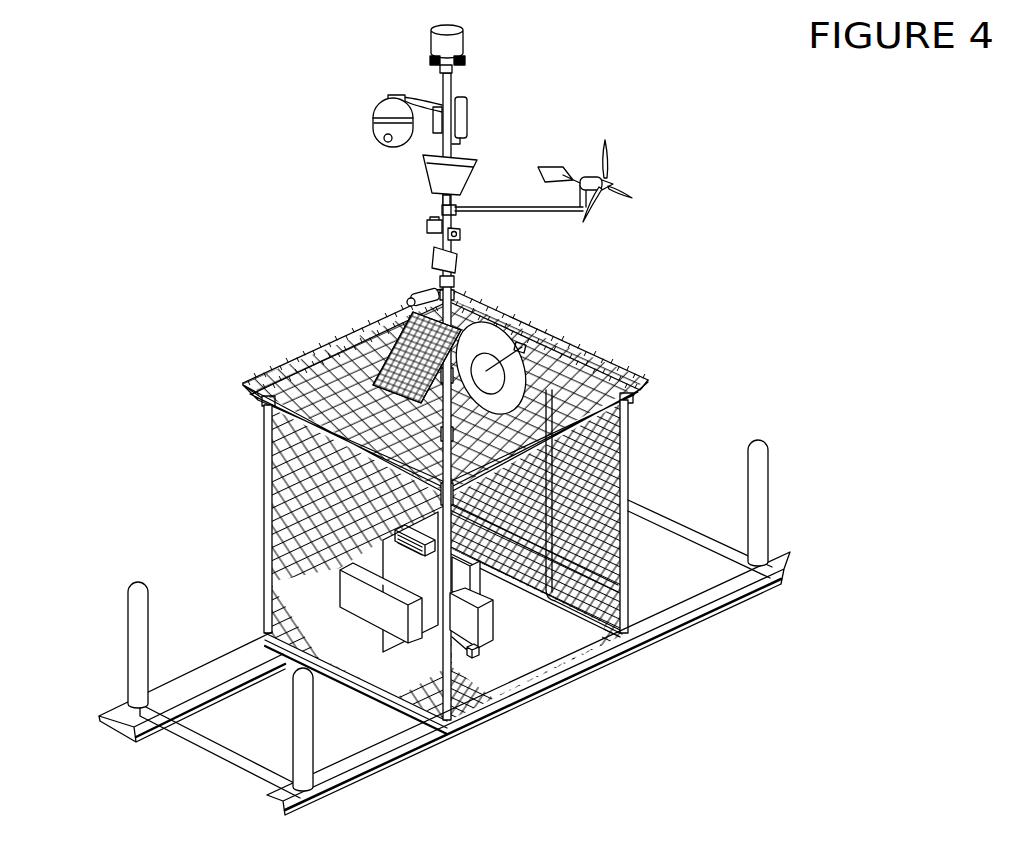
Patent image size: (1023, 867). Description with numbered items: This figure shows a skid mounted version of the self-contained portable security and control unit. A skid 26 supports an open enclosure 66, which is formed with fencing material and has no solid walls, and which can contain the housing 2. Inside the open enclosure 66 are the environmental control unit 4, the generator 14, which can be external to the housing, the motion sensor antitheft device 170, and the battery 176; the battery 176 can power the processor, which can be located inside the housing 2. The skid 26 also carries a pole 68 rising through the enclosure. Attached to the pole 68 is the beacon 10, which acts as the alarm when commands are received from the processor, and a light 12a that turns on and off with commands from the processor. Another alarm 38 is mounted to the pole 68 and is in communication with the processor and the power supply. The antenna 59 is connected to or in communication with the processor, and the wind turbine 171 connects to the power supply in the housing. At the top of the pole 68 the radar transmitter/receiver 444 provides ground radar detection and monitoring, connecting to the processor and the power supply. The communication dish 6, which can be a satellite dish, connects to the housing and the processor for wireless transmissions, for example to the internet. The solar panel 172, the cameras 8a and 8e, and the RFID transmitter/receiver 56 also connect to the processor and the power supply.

The radar transmitter/receiver 444 is at (428, 43).
The camera 8a is at (378, 118).
The antenna 59 is at (466, 121).
The light 12a is at (470, 176).
The wind turbine 171 is at (632, 195).
The beacon 10 is at (426, 226).
The alarm 38 is at (462, 235).
The pole 68 is at (443, 283).
The RFID transmitter/receiver 56 is at (455, 268).
The camera 8e is at (408, 296).
The solar panel 172 is at (398, 342).
The communication dish 6 is at (480, 340).
The open enclosure 66 is at (625, 462).
The environmental control unit 4 is at (408, 527).
The battery 176 is at (372, 612).
The housing 2 is at (464, 570).
The generator 14 is at (484, 638).
The motion sensor antitheft device 170 is at (474, 657).
The skid 26 is at (438, 738).